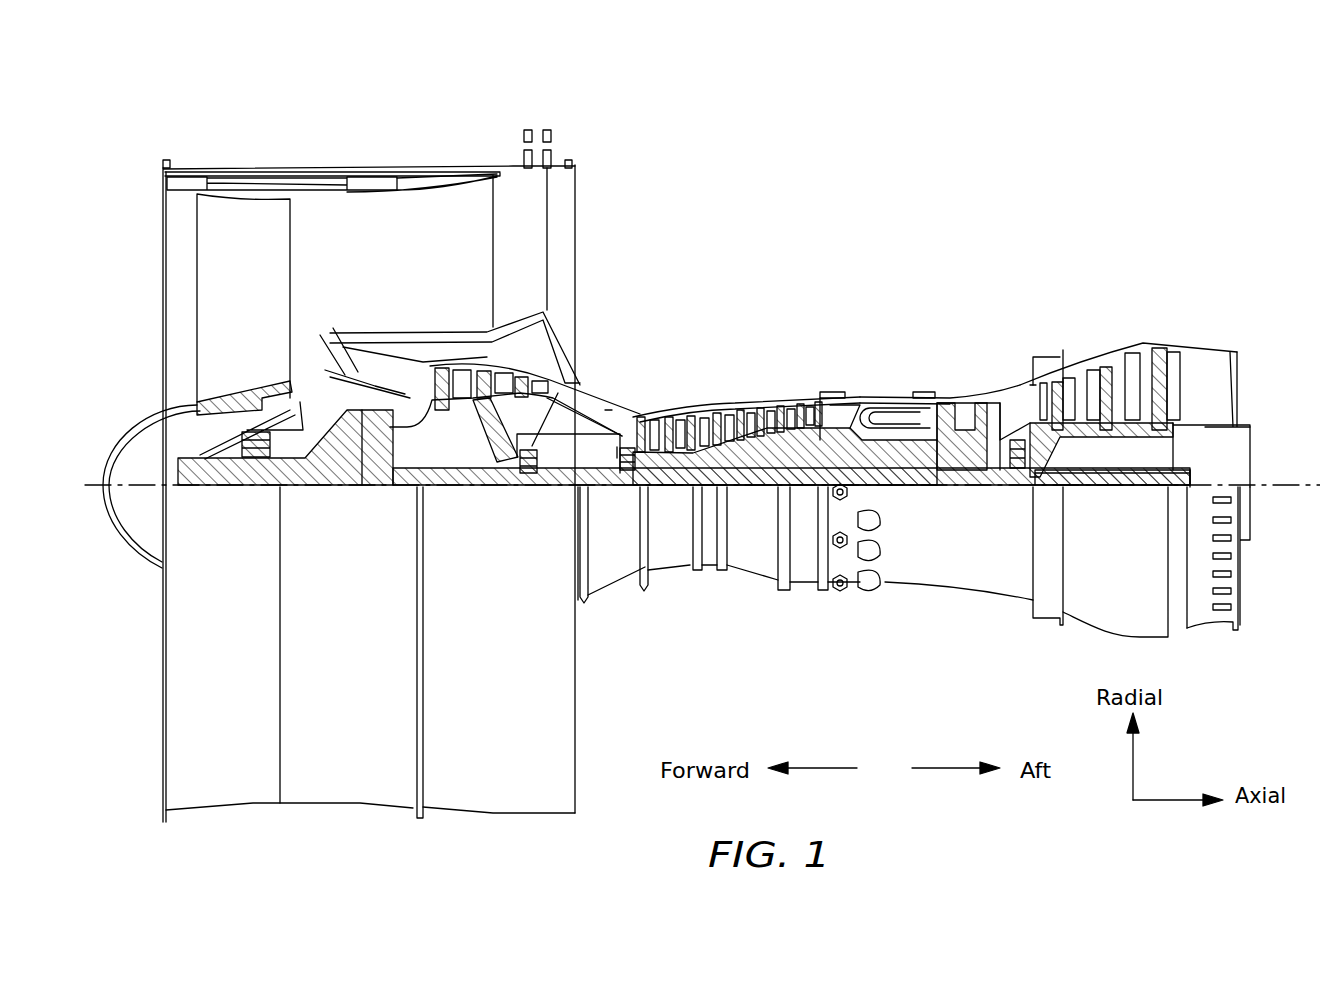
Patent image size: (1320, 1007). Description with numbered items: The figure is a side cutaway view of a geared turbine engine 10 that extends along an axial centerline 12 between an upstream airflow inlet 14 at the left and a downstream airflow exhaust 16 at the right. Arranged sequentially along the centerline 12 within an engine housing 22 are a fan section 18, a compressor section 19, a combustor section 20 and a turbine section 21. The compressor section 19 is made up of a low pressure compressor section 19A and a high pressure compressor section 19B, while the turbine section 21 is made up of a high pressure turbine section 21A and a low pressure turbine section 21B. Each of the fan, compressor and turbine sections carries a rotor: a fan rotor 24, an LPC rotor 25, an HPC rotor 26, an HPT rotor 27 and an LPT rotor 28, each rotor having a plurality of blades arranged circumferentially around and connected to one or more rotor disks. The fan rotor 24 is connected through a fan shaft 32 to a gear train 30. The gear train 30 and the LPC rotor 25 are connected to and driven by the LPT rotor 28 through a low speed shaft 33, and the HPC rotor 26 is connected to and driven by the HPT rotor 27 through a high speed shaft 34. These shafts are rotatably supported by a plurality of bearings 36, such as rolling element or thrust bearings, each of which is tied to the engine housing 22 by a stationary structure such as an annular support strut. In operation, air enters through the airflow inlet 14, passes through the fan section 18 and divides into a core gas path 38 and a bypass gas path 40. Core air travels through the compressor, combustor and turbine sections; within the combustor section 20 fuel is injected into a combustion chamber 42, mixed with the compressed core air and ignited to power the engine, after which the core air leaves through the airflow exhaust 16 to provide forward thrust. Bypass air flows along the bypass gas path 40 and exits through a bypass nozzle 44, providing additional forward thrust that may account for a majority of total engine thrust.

The geared turbine engine 10 is at (131, 152).
The axial centerline 12 is at (1300, 500).
The airflow inlet 14 is at (163, 243).
The airflow exhaust 16 is at (1243, 390).
The fan section 18 is at (340, 142).
The compressor section 19 is at (801, 78).
The low pressure compressor section 19A is at (580, 130).
The high pressure compressor section 19B is at (803, 330).
The combustor section 20 is at (930, 330).
The turbine section 21 is at (1205, 257).
The high pressure turbine section 21A is at (1015, 330).
The low pressure turbine section 21B is at (1205, 330).
The engine housing 22 is at (597, 596).
The fan rotor 24 is at (173, 405).
The LPC rotor 25 is at (478, 440).
The HPC rotor 26 is at (753, 455).
The HPT rotor 27 is at (975, 487).
The LPT rotor 28 is at (1125, 440).
The gear train 30 is at (375, 487).
The fan shaft 32 is at (228, 487).
The low speed shaft 33 is at (803, 490).
The high speed shaft 34 is at (890, 487).
The bearings 36 is at (270, 487).
The core gas path 38 is at (598, 410).
The bypass gas path 40 is at (422, 258).
The combustion chamber 42 is at (885, 415).
The bypass nozzle 44 is at (578, 218).